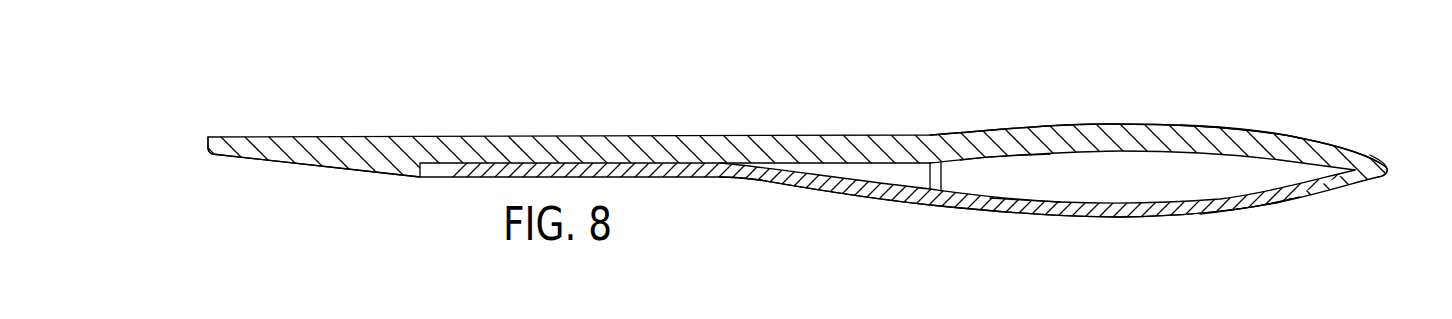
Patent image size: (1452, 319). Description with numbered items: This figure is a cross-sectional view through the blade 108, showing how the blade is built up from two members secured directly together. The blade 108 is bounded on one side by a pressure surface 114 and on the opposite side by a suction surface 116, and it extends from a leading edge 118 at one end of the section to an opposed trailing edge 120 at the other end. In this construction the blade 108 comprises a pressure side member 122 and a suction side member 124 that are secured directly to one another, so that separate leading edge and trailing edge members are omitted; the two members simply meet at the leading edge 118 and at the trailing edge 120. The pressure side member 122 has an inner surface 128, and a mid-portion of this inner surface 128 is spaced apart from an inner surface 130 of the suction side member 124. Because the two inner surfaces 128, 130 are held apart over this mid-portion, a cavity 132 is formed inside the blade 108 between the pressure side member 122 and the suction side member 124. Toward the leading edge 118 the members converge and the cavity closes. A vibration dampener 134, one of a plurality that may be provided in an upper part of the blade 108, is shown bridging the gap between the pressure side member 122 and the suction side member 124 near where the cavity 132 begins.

The blade 108 is at (1144, 96).
The pressure surface 114 is at (1048, 217).
The suction surface 116 is at (1010, 128).
The leading edge 118 is at (1387, 170).
The trailing edge 120 is at (207, 145).
The pressure side member 122 is at (1267, 211).
The suction side member 124 is at (1242, 127).
The inner surface of pressure side member 128 is at (1028, 198).
The inner surface of suction side member 130 is at (1004, 155).
The cavity 132 is at (1199, 182).
The vibration dampener 134 is at (946, 175).